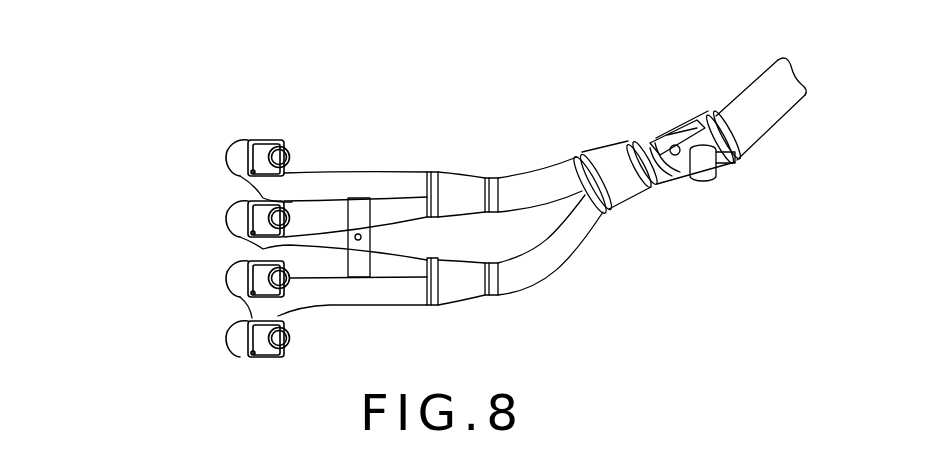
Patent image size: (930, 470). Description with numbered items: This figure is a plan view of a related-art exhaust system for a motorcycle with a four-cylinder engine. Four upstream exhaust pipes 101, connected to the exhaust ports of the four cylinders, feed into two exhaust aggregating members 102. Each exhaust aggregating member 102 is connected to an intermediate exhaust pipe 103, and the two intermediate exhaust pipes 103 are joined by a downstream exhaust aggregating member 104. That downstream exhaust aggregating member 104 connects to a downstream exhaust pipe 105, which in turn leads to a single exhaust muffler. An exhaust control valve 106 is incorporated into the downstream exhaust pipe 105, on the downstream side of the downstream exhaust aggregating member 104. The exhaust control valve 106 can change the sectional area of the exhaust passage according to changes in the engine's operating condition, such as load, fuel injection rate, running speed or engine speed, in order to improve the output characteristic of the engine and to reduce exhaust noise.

The upstream exhaust pipes 101 is at (323, 210).
The exhaust aggregating members 102 is at (457, 180).
The intermediate exhaust pipes 103 is at (542, 177).
The downstream exhaust aggregating member 104 is at (630, 190).
The downstream exhaust pipe 105 is at (755, 100).
The exhaust control valve 106 is at (675, 145).